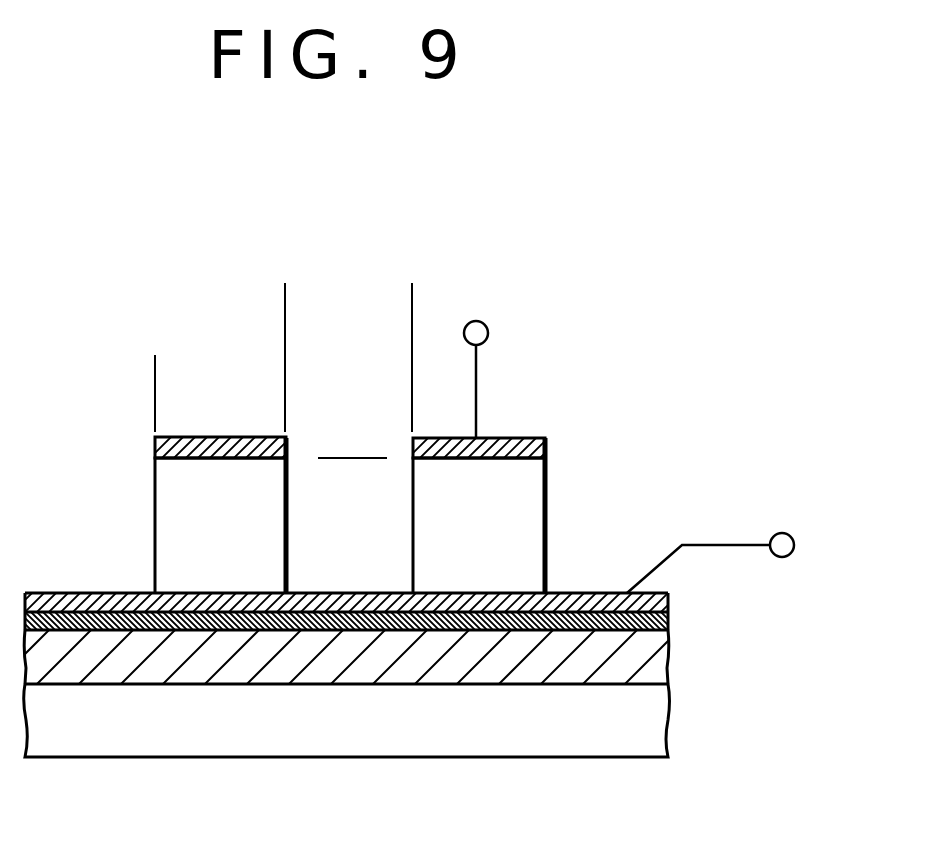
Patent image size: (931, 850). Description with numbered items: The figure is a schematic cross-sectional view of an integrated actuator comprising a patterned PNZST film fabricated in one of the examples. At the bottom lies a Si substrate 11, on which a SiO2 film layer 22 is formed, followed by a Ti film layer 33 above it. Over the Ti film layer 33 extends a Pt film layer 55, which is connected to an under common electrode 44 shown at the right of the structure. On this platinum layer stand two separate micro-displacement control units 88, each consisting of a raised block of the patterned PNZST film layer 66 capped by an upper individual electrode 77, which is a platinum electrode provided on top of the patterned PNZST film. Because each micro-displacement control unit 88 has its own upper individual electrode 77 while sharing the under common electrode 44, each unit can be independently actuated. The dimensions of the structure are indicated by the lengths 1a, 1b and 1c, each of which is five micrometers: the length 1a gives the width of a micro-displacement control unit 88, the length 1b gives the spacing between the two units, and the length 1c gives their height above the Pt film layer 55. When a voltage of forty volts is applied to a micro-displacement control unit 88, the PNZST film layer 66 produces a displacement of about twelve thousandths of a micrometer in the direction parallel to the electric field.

The Si substrate 11 is at (650, 722).
The SiO2 film layer 22 is at (662, 658).
The Ti film layer 33 is at (663, 623).
The under common electrode 44 is at (780, 532).
The Pt film layer 55 is at (545, 443).
The PNZST film layer 66 is at (525, 470).
The upper individual electrode 77 is at (477, 321).
The micro-displacement control unit 88 is at (167, 502).
The length 1a is at (284, 373).
The length 1b is at (410, 311).
The length 1c is at (353, 460).